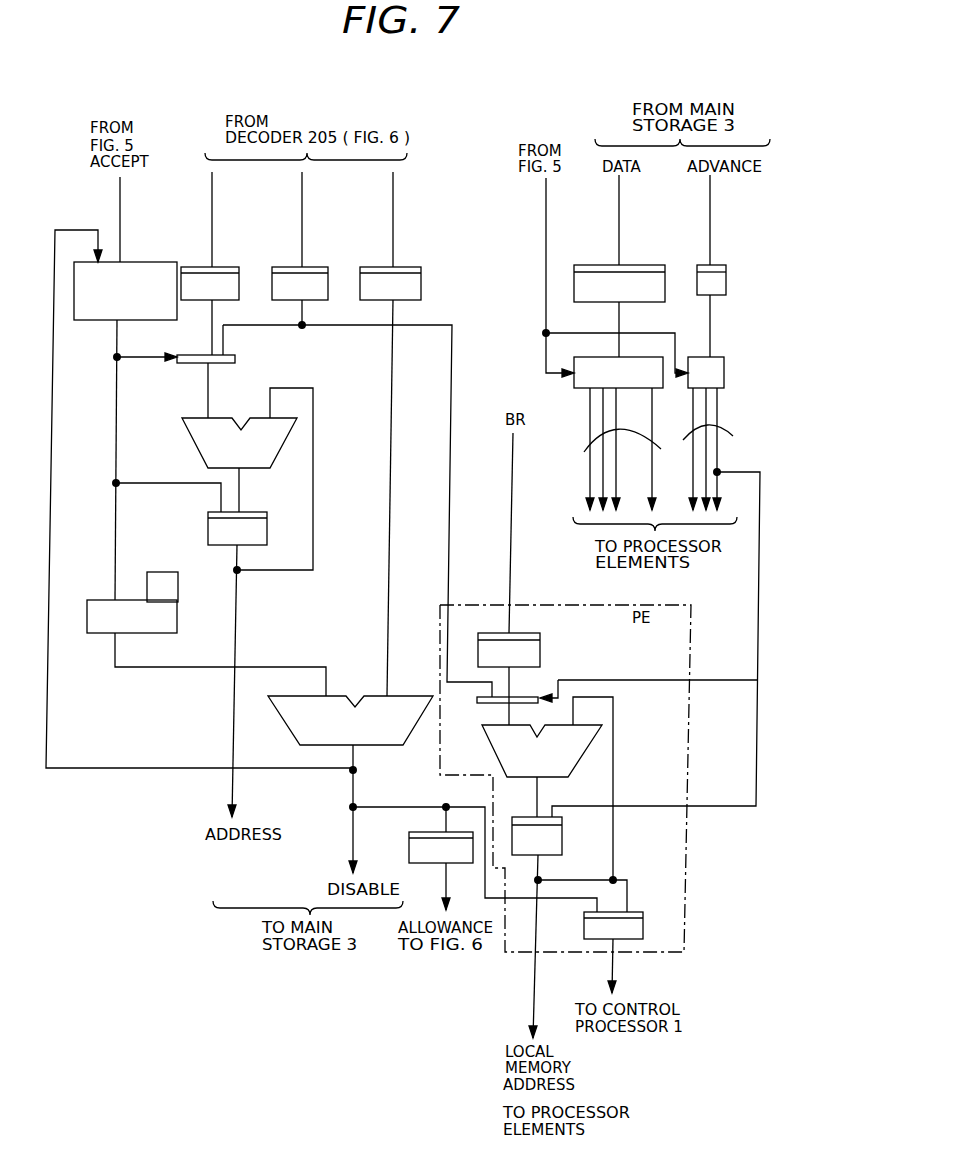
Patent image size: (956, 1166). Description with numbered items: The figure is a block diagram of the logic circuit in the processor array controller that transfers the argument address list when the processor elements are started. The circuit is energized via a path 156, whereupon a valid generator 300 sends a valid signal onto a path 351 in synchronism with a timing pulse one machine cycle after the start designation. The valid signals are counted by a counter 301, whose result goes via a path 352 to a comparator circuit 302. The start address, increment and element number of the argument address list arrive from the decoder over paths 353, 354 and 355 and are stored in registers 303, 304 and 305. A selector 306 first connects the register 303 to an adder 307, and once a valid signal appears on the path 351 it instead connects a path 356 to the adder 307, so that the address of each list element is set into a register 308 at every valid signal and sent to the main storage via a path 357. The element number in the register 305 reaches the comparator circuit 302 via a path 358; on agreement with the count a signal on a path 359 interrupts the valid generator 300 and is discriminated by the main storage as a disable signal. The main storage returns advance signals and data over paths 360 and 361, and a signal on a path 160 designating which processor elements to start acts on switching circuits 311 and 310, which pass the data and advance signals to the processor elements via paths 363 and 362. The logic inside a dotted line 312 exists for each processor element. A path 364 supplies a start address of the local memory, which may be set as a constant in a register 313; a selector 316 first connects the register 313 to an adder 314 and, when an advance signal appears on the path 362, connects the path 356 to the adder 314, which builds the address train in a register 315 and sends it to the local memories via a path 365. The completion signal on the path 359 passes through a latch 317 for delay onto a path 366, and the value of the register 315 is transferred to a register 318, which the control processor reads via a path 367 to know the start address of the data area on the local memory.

The path 156 is at (121, 211).
The path 160 is at (547, 230).
The valid generator 300 is at (157, 261).
The counter 301 is at (178, 607).
The comparator circuit 302 is at (273, 710).
The register 303 is at (233, 264).
The register 304 is at (323, 264).
The register 305 is at (410, 264).
The selector 306 is at (240, 357).
The adder 307 is at (192, 447).
The register 308 is at (257, 512).
The switching circuit 310 is at (726, 365).
The switching circuit 311 is at (603, 357).
The dotted line 312 is at (695, 647).
The register 313 is at (541, 641).
The adder 314 is at (496, 757).
The register 315 is at (563, 832).
The selector 316 is at (536, 694).
The latch 317 is at (409, 848).
The register 318 is at (637, 911).
The path 351 is at (118, 405).
The path 352 is at (274, 666).
The path 353 is at (213, 211).
The path 354 is at (303, 211).
The path 355 is at (394, 211).
The path 356 is at (318, 327).
The path 357 is at (238, 622).
The path 358 is at (389, 511).
The path 359 is at (48, 722).
The path 360 is at (711, 233).
The path 361 is at (620, 230).
The path 362 is at (730, 428).
The path 363 is at (587, 443).
The path 364 is at (513, 511).
The path 365 is at (535, 977).
The path 366 is at (447, 893).
The path 367 is at (614, 972).